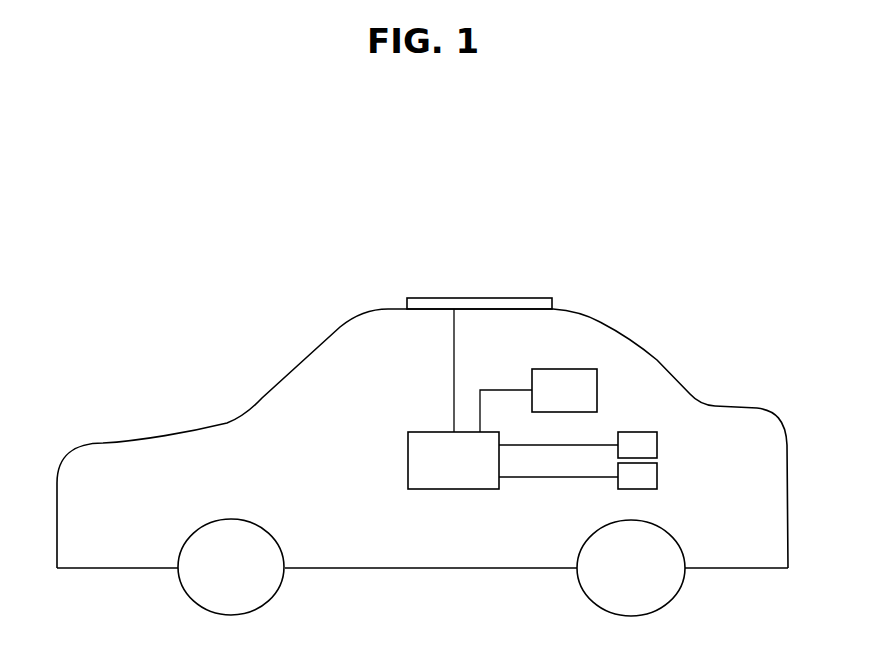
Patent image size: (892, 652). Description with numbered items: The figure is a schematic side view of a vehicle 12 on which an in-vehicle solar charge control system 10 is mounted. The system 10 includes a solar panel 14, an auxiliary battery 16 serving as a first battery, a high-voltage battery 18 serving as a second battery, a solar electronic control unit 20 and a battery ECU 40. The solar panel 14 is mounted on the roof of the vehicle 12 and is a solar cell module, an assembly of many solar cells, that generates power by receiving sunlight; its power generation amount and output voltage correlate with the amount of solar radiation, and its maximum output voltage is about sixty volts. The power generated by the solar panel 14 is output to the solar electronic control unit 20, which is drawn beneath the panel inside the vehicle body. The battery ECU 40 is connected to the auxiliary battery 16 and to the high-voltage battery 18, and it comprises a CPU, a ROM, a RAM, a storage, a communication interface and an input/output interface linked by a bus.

The system 10 is at (363, 455).
The vehicle 12 is at (690, 348).
The solar panel 14 is at (500, 297).
The auxiliary battery 16 is at (657, 478).
The high-voltage battery 18 is at (657, 443).
The solar electronic control unit 20 is at (454, 490).
The battery ECU 40 is at (597, 393).